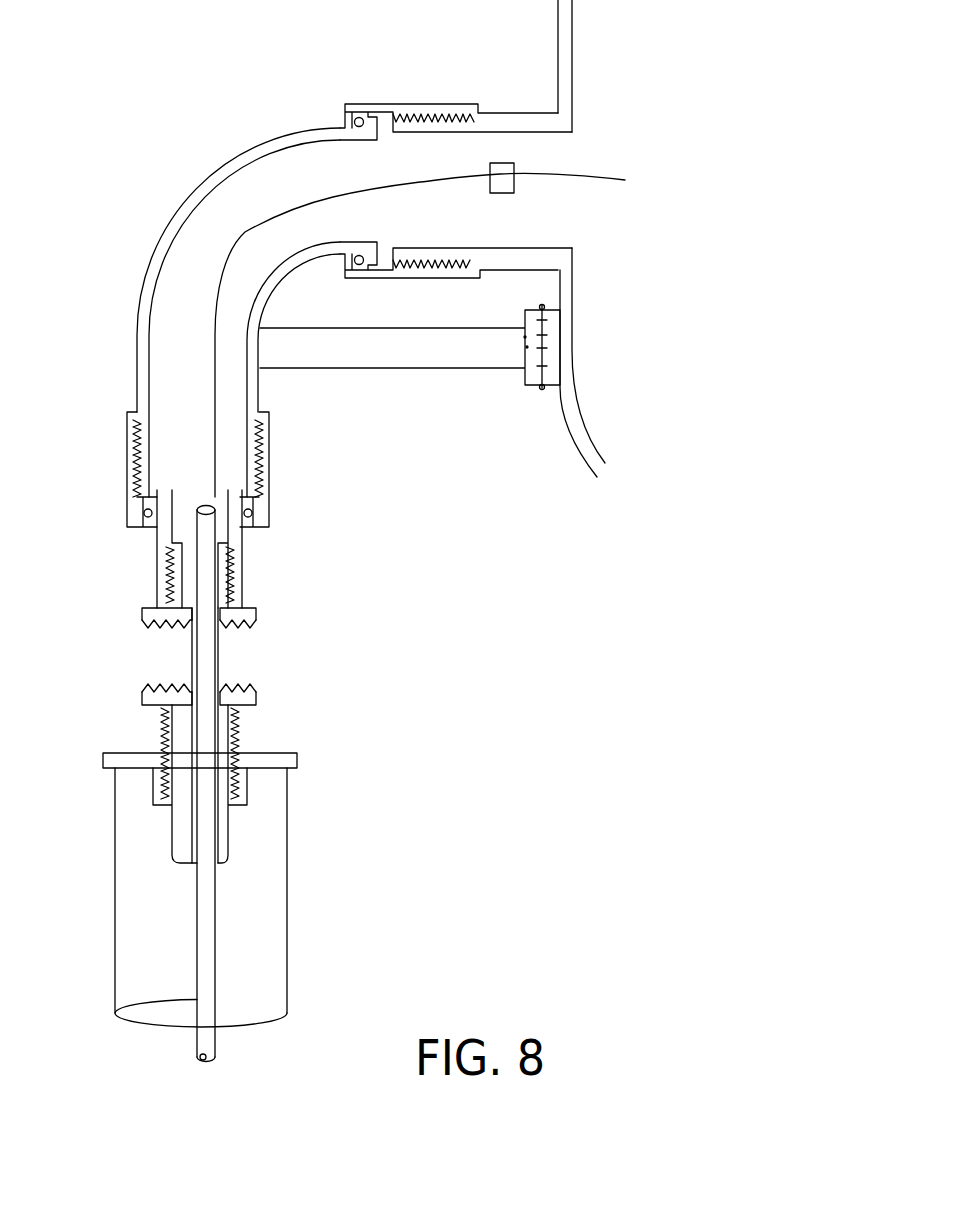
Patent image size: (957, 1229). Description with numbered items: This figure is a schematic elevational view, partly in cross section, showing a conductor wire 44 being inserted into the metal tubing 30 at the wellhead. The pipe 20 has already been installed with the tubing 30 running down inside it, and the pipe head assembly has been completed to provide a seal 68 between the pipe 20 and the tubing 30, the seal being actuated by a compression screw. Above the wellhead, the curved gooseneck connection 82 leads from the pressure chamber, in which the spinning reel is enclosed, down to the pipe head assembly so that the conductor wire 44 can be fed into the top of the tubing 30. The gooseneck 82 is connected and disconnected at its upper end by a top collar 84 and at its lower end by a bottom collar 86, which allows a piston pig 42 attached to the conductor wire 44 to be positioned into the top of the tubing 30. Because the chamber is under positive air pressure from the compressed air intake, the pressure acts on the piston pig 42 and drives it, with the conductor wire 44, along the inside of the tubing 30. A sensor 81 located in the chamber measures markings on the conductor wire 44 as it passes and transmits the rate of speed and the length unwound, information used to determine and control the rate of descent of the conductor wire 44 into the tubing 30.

The pipe 20 is at (222, 838).
The metal tubing 30 is at (200, 580).
The piston pig 42 is at (204, 468).
The conductor wire 44 is at (560, 178).
The seal 68 is at (232, 660).
The sensor 81 is at (500, 165).
The gooseneck connection 82 is at (150, 260).
The top collar 84 is at (342, 103).
The bottom collar 86 is at (118, 452).